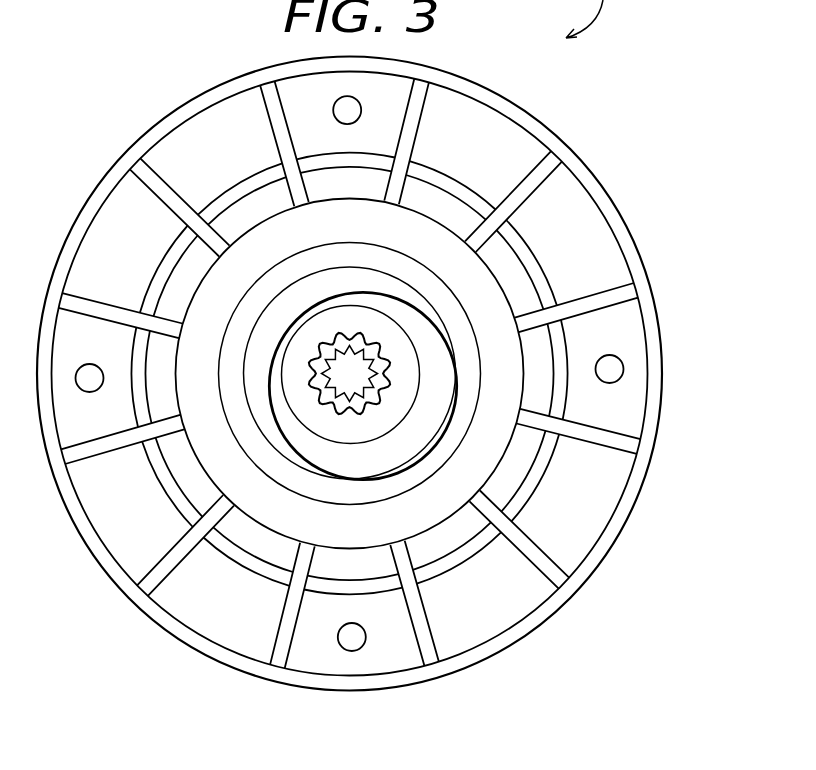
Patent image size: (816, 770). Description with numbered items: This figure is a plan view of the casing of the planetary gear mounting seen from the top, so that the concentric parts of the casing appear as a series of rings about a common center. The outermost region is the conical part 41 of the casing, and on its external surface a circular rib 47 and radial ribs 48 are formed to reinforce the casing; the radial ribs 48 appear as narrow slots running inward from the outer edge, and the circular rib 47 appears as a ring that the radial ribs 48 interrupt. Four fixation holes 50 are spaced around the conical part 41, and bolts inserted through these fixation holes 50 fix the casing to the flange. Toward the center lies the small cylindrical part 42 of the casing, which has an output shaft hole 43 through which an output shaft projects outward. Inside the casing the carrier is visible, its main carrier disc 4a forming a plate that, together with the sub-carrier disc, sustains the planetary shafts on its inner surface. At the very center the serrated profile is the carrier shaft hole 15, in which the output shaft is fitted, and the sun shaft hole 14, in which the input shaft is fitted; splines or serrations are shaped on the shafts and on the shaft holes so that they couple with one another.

The sun shaft hole 14 is at (322, 385).
The carrier shaft hole 15 is at (370, 395).
The main carrier disc 4a is at (368, 428).
The conical part 41 is at (182, 595).
The small cylindrical part 42 is at (280, 433).
The output shaft hole 43 is at (330, 450).
The circular rib 47 is at (540, 275).
The radial ribs 48 is at (525, 193).
The fixation holes 50 is at (607, 372).